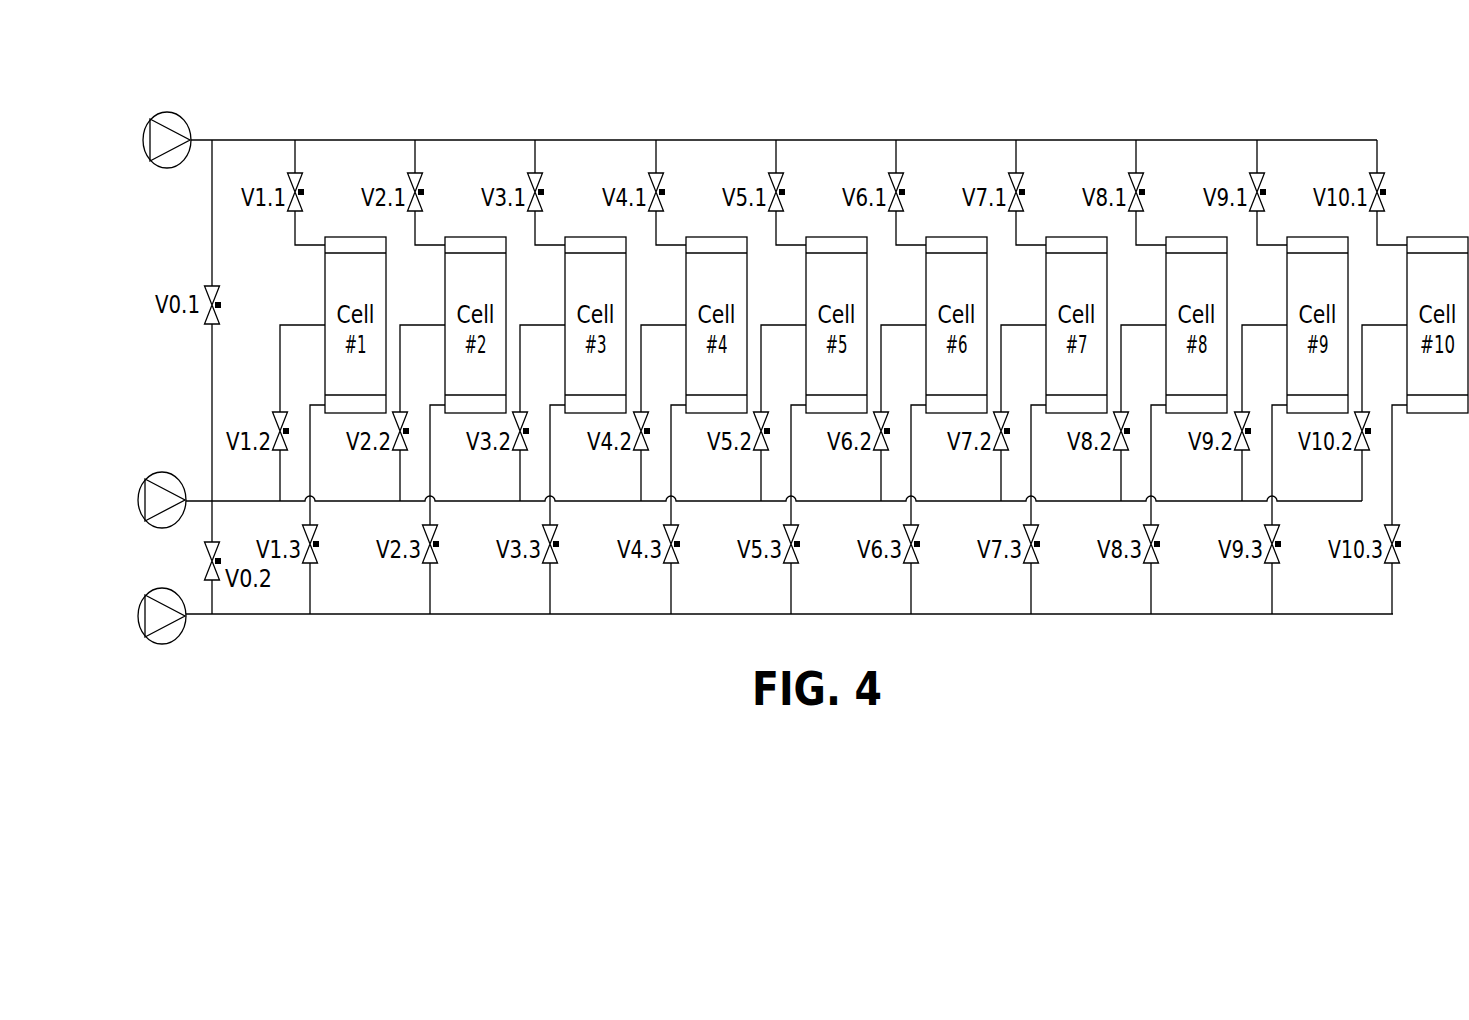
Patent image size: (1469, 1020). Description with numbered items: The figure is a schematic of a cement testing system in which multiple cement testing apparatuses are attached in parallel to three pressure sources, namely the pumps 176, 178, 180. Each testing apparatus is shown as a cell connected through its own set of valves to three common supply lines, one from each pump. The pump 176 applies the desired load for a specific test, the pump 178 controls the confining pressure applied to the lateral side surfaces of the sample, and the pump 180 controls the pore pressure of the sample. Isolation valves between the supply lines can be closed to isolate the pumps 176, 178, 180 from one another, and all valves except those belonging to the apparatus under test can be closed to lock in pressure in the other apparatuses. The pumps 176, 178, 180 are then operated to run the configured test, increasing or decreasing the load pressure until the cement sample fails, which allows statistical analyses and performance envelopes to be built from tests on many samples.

The pump 176 is at (181, 117).
The pump 178 is at (179, 480).
The pump 180 is at (177, 637).